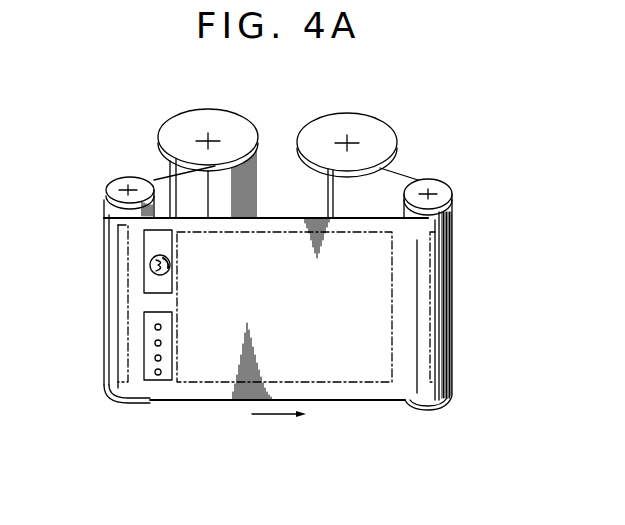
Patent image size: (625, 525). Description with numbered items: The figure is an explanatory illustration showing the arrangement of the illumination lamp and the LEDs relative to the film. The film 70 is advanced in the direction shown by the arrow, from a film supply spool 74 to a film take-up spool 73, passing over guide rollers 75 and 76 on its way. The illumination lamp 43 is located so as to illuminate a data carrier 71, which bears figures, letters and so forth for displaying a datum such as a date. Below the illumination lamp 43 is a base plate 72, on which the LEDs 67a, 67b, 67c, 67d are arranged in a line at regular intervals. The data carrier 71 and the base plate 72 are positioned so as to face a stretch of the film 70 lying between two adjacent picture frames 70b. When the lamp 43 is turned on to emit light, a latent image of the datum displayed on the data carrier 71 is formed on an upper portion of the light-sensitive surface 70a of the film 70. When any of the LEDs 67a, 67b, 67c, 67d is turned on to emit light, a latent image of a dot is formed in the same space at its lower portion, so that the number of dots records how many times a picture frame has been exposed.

The film 70 is at (372, 405).
The light-sensitive surface of the film 70a is at (213, 401).
The picture frames 70b is at (282, 232).
The data carrier 71 is at (148, 247).
The illumination lamp 43 is at (172, 264).
The base plate 72 is at (168, 333).
The LED 67a is at (160, 376).
The LED 67b is at (154, 358).
The LED 67c is at (154, 343).
The LED 67d is at (154, 327).
The film take-up spool 73 is at (347, 113).
The film supply spool 74 is at (208, 108).
The guide roller 75 is at (430, 179).
The guide roller 76 is at (128, 177).